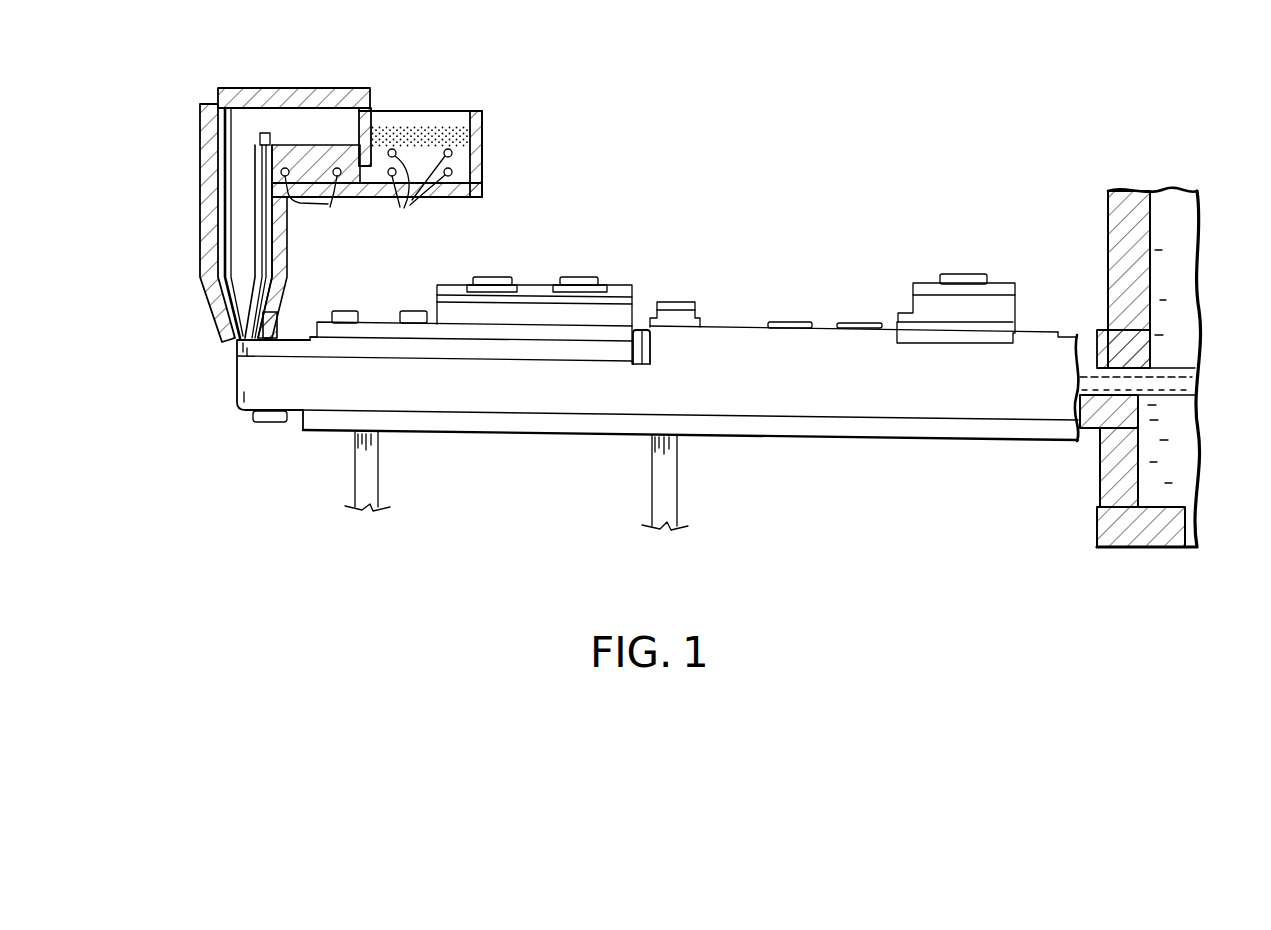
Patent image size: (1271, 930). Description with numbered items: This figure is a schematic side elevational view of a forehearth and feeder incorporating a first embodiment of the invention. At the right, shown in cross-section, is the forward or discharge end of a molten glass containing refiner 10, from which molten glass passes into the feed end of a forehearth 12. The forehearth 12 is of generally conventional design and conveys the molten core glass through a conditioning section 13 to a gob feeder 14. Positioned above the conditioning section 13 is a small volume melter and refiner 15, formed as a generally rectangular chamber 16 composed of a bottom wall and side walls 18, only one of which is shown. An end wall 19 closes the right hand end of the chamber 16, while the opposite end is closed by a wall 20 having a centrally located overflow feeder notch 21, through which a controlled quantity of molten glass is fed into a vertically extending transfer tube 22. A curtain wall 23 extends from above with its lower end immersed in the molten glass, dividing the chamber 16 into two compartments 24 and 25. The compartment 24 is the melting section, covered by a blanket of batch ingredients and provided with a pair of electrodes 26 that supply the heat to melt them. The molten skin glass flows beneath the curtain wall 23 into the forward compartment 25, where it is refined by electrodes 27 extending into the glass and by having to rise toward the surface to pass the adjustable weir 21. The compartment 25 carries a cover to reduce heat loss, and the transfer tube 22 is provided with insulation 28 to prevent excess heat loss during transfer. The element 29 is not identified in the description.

The refiner 10 is at (1169, 214).
The forehearth 12 is at (966, 456).
The conditioning section 13 is at (495, 403).
The gob feeder 14 is at (256, 419).
The small volume melter and refiner 15 is at (281, 74).
The chamber 16 is at (450, 206).
The side walls 18 is at (438, 118).
The end wall 19 is at (482, 158).
The wall 20 is at (260, 157).
The overflow feeder notch 21 is at (263, 131).
The transfer tube 22 is at (218, 270).
The curtain wall 23 is at (375, 116).
The compartment 24 is at (413, 147).
The compartment 25 is at (318, 153).
The electrodes 26 is at (419, 193).
The electrodes 27 is at (311, 200).
The insulation 28 is at (203, 210).
The end cap 29 is at (237, 379).